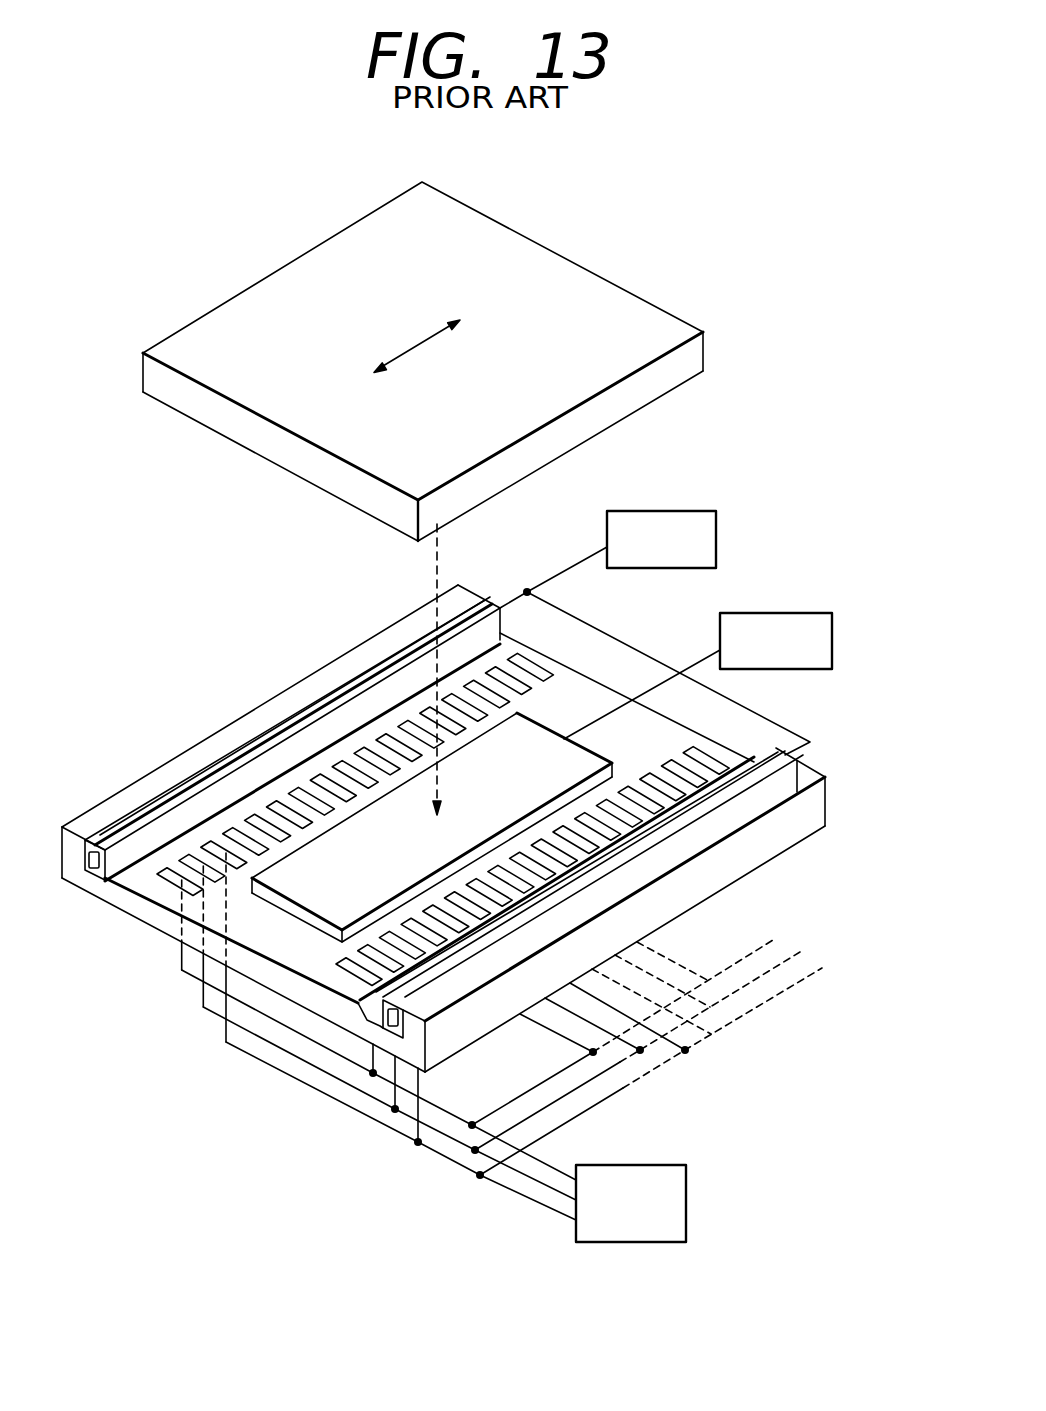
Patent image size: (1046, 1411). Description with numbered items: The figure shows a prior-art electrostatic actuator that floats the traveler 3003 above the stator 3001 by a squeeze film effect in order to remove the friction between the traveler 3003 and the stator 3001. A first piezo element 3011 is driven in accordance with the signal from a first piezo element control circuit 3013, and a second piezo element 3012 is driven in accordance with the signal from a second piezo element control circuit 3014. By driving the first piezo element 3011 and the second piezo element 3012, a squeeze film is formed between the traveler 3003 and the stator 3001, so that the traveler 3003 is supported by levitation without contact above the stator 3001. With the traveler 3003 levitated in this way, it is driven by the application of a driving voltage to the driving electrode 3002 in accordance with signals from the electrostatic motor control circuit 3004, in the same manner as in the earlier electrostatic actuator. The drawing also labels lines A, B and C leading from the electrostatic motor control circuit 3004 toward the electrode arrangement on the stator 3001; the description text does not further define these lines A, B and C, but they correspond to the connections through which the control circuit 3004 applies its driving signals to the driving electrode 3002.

The stator 3001 is at (203, 740).
The driving electrode 3002 is at (722, 813).
The traveler 3003 is at (479, 229).
The electrostatic motor control circuit 3004 is at (479, 1122).
The first piezo element 3011 is at (393, 818).
The second piezo element 3012 is at (390, 660).
The first piezo element control circuit 3013 is at (792, 613).
The second piezo element control circuit 3014 is at (674, 511).
The drive line A is at (548, 1162).
The drive line B is at (520, 1197).
The drive line C is at (545, 1213).